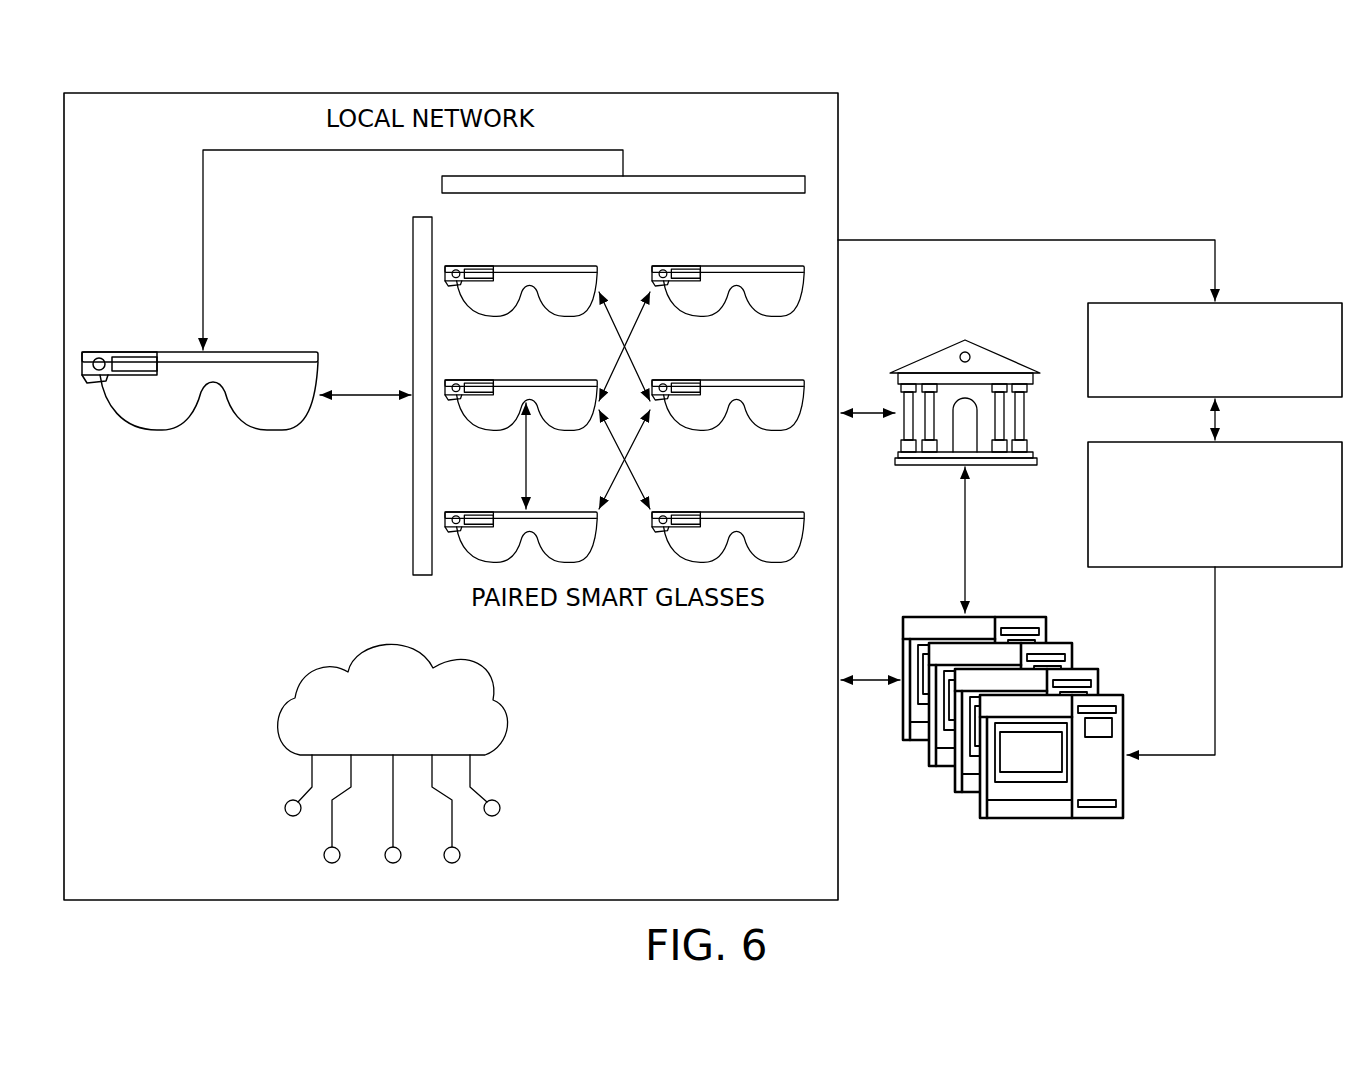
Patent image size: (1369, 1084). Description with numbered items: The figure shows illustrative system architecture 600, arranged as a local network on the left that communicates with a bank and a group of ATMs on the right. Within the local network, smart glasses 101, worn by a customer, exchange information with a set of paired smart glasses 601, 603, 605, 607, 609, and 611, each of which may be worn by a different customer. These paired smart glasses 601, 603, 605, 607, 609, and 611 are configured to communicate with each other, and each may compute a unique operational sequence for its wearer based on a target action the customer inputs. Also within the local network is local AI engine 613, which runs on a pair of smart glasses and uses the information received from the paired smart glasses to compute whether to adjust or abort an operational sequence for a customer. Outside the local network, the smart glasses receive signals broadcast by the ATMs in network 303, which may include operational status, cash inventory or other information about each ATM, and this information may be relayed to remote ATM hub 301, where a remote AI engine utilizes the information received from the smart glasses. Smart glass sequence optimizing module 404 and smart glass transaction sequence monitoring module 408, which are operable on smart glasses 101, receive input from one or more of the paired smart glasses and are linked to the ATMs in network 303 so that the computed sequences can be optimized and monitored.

The system architecture 600 is at (150, 74).
The smart glasses 101 is at (258, 352).
The smart glasses 601 is at (532, 266).
The smart glasses 603 is at (532, 380).
The smart glasses 605 is at (535, 512).
The smart glasses 607 is at (743, 266).
The smart glasses 609 is at (743, 380).
The smart glasses 611 is at (745, 512).
The local AI engine 613 is at (512, 718).
The remote ATM hub 301 is at (929, 466).
The ATM network 303 is at (1093, 605).
The smart glass sequence optimizing module 404 is at (1262, 303).
The smart glass transaction sequence monitoring module 408 is at (1262, 442).